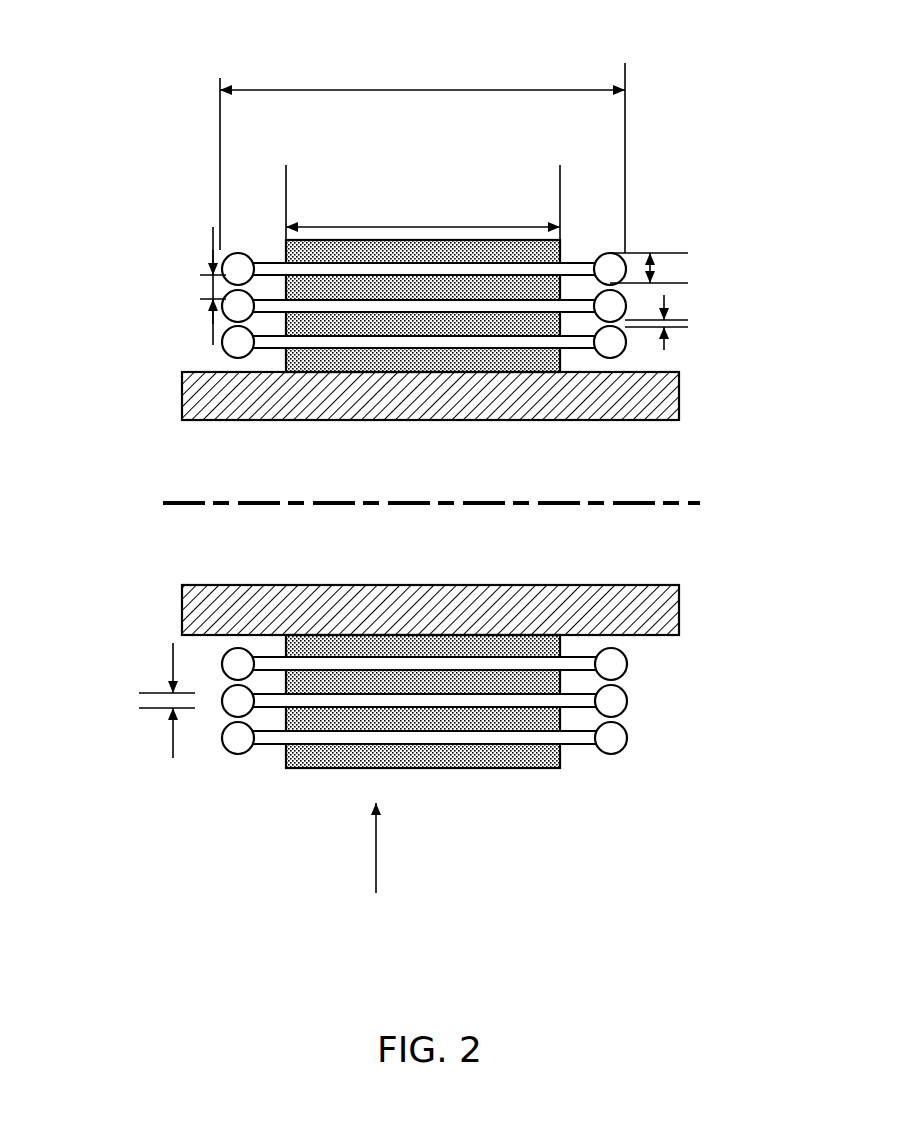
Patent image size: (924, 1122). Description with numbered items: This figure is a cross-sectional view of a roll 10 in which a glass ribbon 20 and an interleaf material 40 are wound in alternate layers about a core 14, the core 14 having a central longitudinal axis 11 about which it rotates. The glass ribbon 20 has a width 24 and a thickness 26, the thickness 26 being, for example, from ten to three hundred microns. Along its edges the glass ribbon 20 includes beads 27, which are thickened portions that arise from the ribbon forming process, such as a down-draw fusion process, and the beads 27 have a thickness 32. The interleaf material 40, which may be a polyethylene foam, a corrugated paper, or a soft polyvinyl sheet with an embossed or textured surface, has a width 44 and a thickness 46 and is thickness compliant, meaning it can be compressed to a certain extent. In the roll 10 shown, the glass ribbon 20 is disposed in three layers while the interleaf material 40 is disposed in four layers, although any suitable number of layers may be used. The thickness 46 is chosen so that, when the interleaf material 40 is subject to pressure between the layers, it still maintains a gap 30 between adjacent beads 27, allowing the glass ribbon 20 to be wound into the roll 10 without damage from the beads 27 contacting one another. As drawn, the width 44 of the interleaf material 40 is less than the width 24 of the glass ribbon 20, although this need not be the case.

The roll 10 is at (376, 862).
The central longitudinal axis 11 is at (187, 503).
The core 14 is at (197, 604).
The glass ribbon 20 is at (398, 663).
The width 24 is at (502, 89).
The thickness 26 is at (173, 740).
The beads 27 is at (612, 664).
The gap 30 is at (665, 347).
The thickness 32 is at (652, 270).
The interleaf material 40 is at (305, 362).
The width 44 is at (425, 227).
The thickness 46 is at (210, 313).